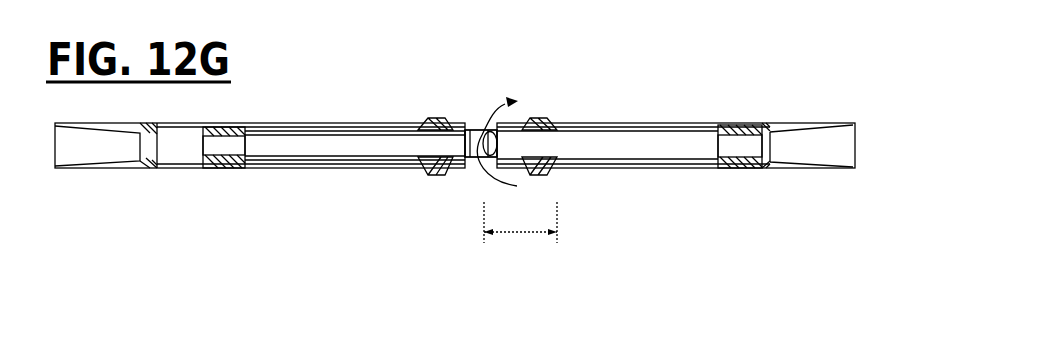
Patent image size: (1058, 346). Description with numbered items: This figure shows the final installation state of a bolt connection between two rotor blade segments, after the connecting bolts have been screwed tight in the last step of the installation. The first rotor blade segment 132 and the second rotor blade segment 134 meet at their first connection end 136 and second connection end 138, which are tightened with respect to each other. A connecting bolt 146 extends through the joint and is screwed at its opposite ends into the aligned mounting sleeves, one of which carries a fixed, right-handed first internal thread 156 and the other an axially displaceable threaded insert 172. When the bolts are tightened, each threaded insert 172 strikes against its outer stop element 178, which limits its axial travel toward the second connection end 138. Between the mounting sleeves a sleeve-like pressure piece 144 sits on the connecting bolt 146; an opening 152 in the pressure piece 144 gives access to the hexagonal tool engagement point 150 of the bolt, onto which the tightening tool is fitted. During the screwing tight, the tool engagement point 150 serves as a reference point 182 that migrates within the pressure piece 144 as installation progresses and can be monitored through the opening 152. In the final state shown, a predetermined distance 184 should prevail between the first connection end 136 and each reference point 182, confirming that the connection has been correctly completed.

The first rotor blade segment 132 is at (697, 104).
The second rotor blade segment 134 is at (288, 104).
The first connection end 136 is at (557, 167).
The second connection end 138 is at (420, 168).
The pressure piece 144 is at (430, 118).
The connecting bolt 146 is at (332, 145).
The tool engagement point 150 is at (472, 122).
The opening 152 is at (513, 121).
The first internal thread 156 is at (742, 127).
The threaded insert 172 is at (207, 168).
The outer stop element 178 is at (243, 165).
The reference point 182 is at (481, 143).
The predetermined distance 184 is at (513, 233).